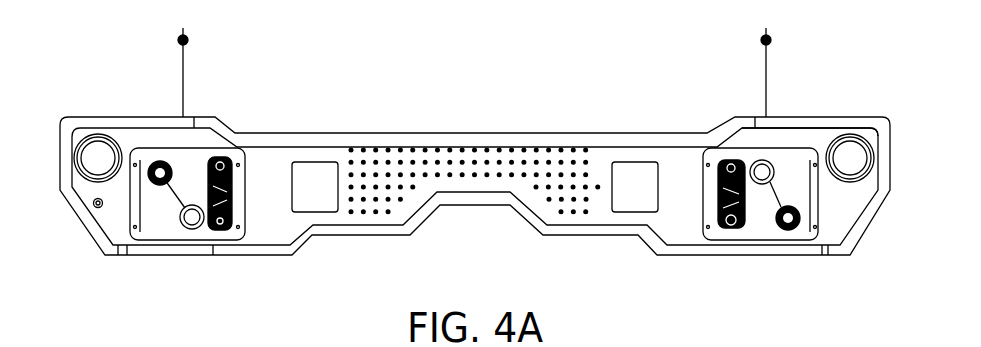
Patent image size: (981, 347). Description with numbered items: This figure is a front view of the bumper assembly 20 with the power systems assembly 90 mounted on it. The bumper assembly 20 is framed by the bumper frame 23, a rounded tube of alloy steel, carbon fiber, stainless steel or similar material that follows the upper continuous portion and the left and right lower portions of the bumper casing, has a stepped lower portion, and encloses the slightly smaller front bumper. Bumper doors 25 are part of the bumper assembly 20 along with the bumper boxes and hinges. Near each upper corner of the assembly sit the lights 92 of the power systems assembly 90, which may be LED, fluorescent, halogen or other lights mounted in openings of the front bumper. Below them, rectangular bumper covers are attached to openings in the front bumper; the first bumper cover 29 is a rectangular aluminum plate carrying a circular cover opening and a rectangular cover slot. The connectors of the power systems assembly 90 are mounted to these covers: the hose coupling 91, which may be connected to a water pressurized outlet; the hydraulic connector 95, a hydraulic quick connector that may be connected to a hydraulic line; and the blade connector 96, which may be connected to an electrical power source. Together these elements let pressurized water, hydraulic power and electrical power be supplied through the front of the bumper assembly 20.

The bumper assembly 20 is at (78, 138).
The bumper frame 23 is at (856, 120).
The bumper doors 25 is at (764, 77).
The first bumper cover 29 is at (762, 236).
The power systems assembly 90 is at (731, 228).
The hose coupling 91 is at (191, 229).
The lights 92 is at (857, 162).
The hydraulic connector 95 is at (724, 174).
The blade connector 96 is at (158, 186).